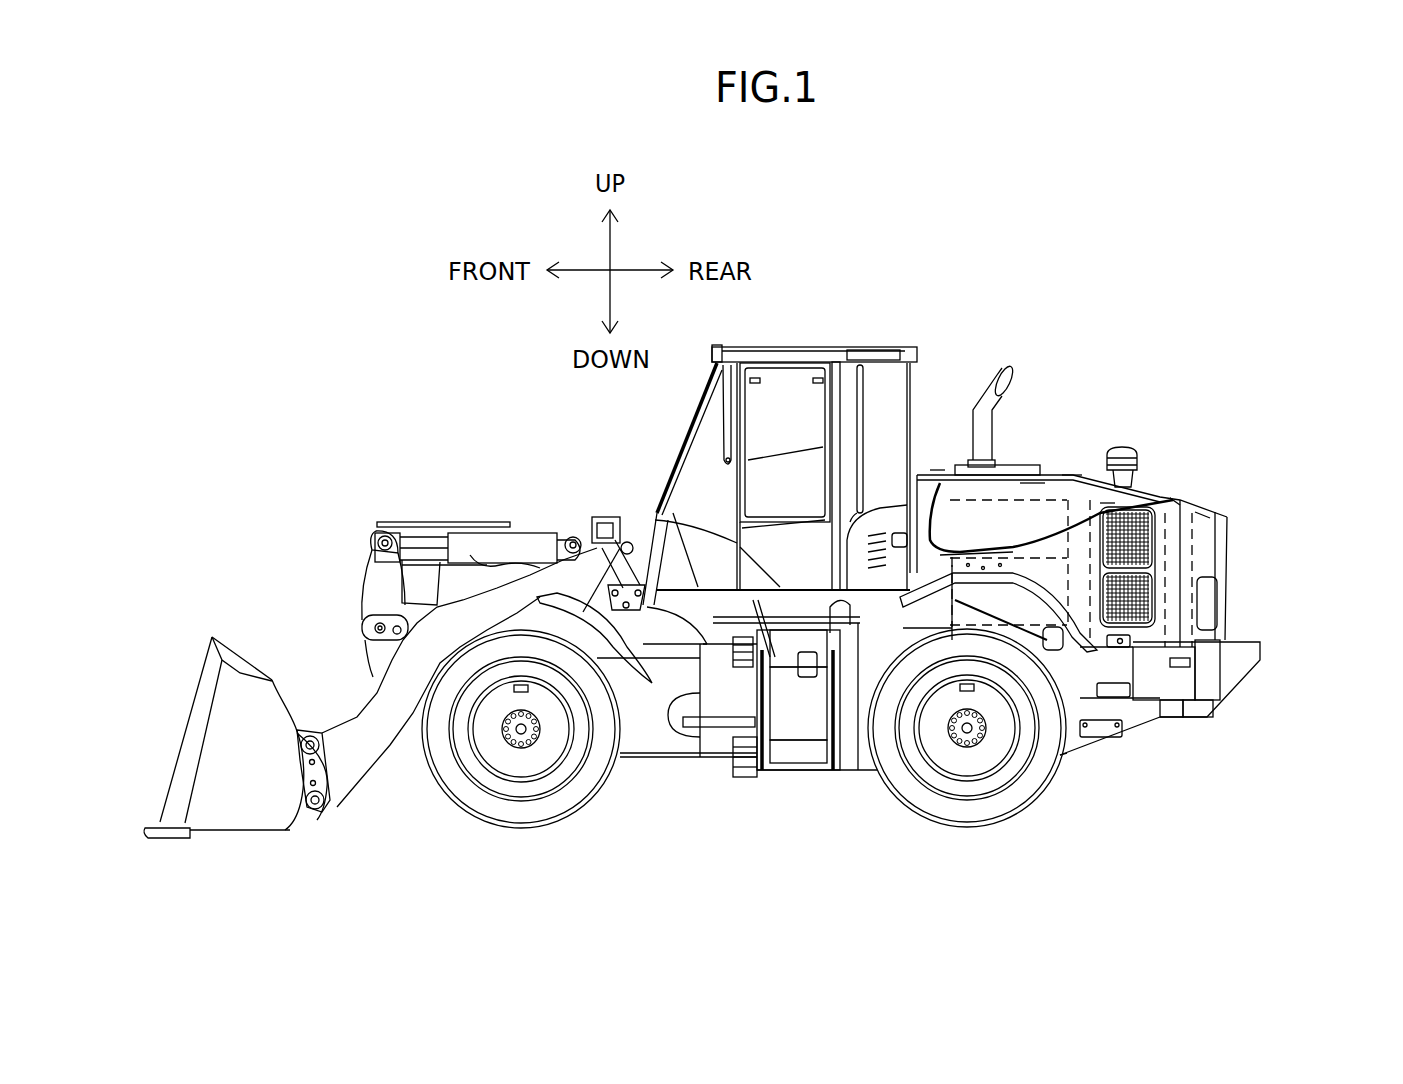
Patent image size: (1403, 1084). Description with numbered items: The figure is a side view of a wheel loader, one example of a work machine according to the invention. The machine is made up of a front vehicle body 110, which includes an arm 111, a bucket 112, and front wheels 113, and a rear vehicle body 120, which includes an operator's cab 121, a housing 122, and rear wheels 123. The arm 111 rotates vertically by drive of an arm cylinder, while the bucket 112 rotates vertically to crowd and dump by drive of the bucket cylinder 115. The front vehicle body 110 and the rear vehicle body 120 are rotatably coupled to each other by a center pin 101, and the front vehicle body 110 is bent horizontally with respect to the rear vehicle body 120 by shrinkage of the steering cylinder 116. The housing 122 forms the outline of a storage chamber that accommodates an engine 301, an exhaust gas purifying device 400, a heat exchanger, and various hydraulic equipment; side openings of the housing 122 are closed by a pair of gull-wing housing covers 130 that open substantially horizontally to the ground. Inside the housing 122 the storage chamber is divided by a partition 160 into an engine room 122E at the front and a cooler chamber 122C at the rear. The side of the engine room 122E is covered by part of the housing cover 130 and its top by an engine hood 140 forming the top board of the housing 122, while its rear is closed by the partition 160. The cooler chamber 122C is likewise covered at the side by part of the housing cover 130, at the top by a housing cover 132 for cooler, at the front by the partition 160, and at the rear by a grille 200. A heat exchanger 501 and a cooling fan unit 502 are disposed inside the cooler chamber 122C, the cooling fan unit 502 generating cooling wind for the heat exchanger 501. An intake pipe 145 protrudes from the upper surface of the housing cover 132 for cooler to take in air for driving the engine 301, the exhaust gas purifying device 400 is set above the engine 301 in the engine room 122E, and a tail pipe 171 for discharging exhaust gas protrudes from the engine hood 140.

The center pin 101 is at (745, 777).
The front vehicle body 110 is at (623, 510).
The arm 111 is at (360, 763).
The bucket 112 is at (215, 830).
The front wheels 113 is at (490, 820).
The bucket cylinder 115 is at (537, 525).
The steering cylinder 116 is at (732, 728).
The rear vehicle body 120 is at (1113, 745).
The operator's cab 121 is at (806, 350).
The housing 122 is at (1012, 493).
The cooler chamber 122C is at (1202, 510).
The engine room 122E is at (938, 467).
The rear wheels 123 is at (990, 818).
The housing cover 130 is at (1147, 503).
The housing cover for cooler 132 is at (1180, 502).
The engine hood 140 is at (1033, 480).
The intake pipe 145 is at (1108, 500).
The partition 160 is at (1130, 440).
The tail pipe 171 is at (982, 392).
The grille 200 is at (1230, 577).
The engine 301 is at (1067, 763).
The exhaust gas purifying device 400 is at (1072, 472).
The heat exchanger 501 is at (1173, 717).
The cooling fan unit 502 is at (1210, 717).